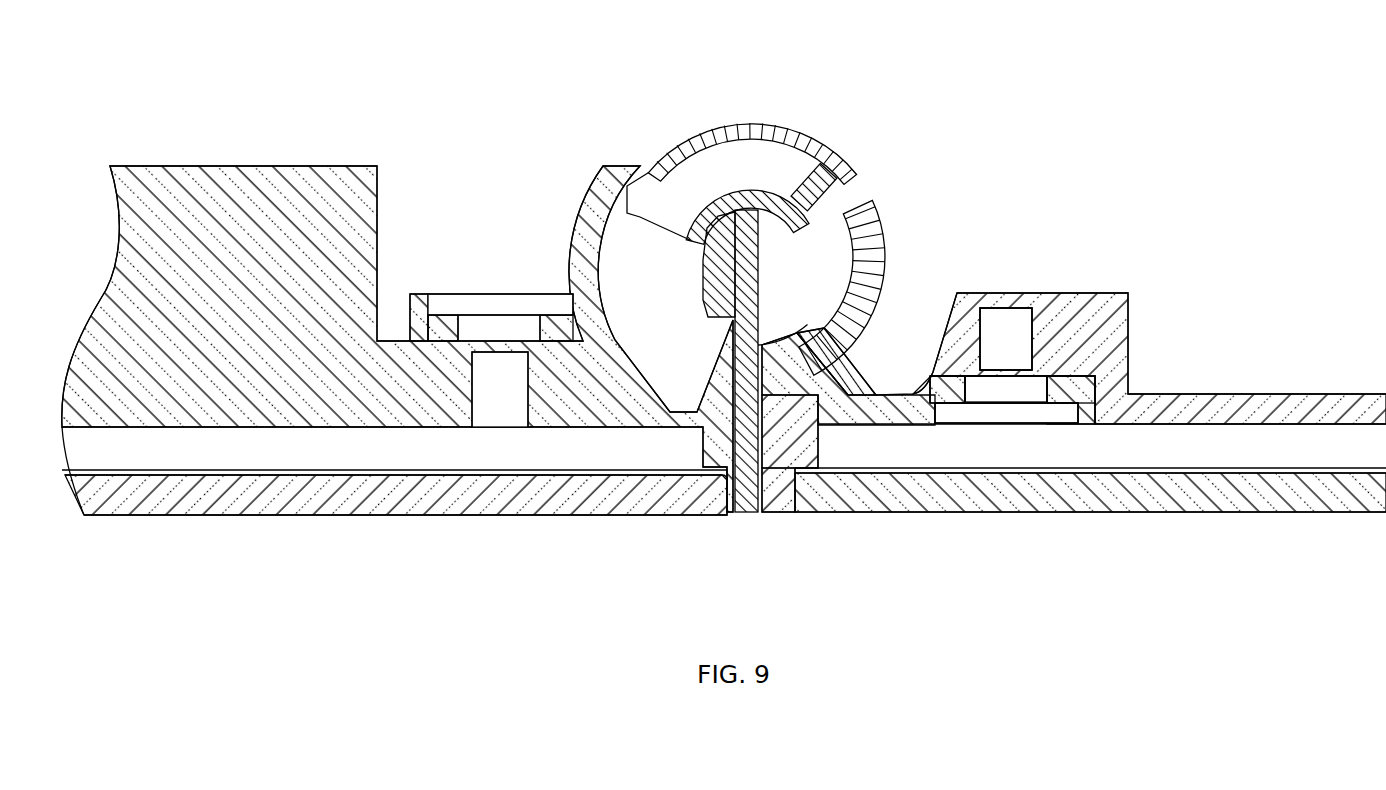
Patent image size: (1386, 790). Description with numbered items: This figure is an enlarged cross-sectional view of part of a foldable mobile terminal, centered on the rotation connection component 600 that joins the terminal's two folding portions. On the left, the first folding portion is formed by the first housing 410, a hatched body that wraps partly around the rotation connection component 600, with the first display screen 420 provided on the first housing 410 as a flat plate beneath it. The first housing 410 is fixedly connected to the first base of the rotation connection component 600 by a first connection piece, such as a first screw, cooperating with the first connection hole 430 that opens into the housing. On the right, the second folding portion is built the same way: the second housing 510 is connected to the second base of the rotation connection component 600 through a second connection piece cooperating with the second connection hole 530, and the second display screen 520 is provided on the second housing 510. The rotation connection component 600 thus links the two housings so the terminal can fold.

The first housing 410 is at (258, 235).
The first display screen 420 is at (365, 493).
The first connection hole 430 is at (500, 325).
The second housing 510 is at (1255, 400).
The second display screen 520 is at (1022, 490).
The second connection hole 530 is at (1015, 320).
The rotation connection component 600 is at (727, 157).